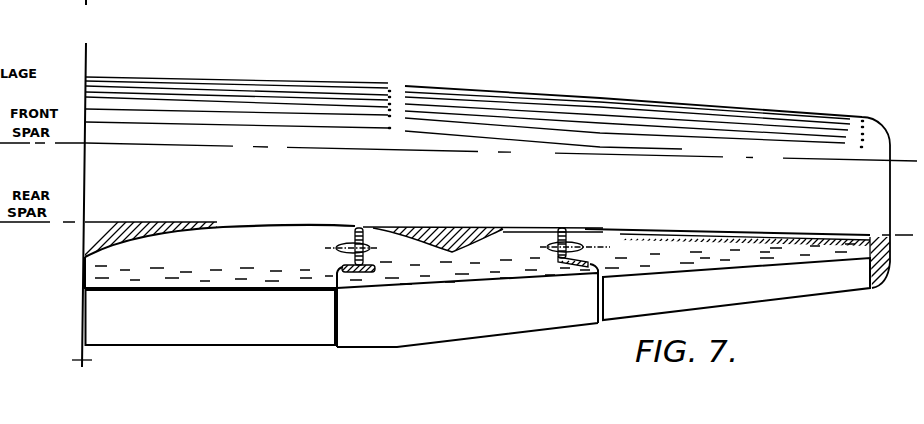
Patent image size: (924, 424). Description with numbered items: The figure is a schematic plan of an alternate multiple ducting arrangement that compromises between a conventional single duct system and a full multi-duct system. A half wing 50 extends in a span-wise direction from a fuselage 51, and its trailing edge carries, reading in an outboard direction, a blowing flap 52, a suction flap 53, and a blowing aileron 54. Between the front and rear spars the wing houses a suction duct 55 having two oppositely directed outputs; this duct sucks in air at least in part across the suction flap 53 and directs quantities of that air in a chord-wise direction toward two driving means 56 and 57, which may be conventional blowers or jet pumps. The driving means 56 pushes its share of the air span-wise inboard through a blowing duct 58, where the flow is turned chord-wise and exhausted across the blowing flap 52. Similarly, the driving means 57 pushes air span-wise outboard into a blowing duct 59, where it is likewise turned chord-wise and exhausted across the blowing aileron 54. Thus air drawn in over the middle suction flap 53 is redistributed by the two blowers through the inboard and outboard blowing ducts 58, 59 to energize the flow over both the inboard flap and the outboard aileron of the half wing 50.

The half wing 50 is at (405, 82).
The fuselage 51 is at (96, 362).
The blowing flap 52 is at (267, 345).
The suction flap 53 is at (447, 333).
The blowing aileron 54 is at (763, 297).
The suction duct 55 is at (505, 235).
The driving means 56 is at (337, 246).
The driving means 57 is at (593, 233).
The blowing duct 58 is at (228, 233).
The blowing duct 59 is at (762, 245).